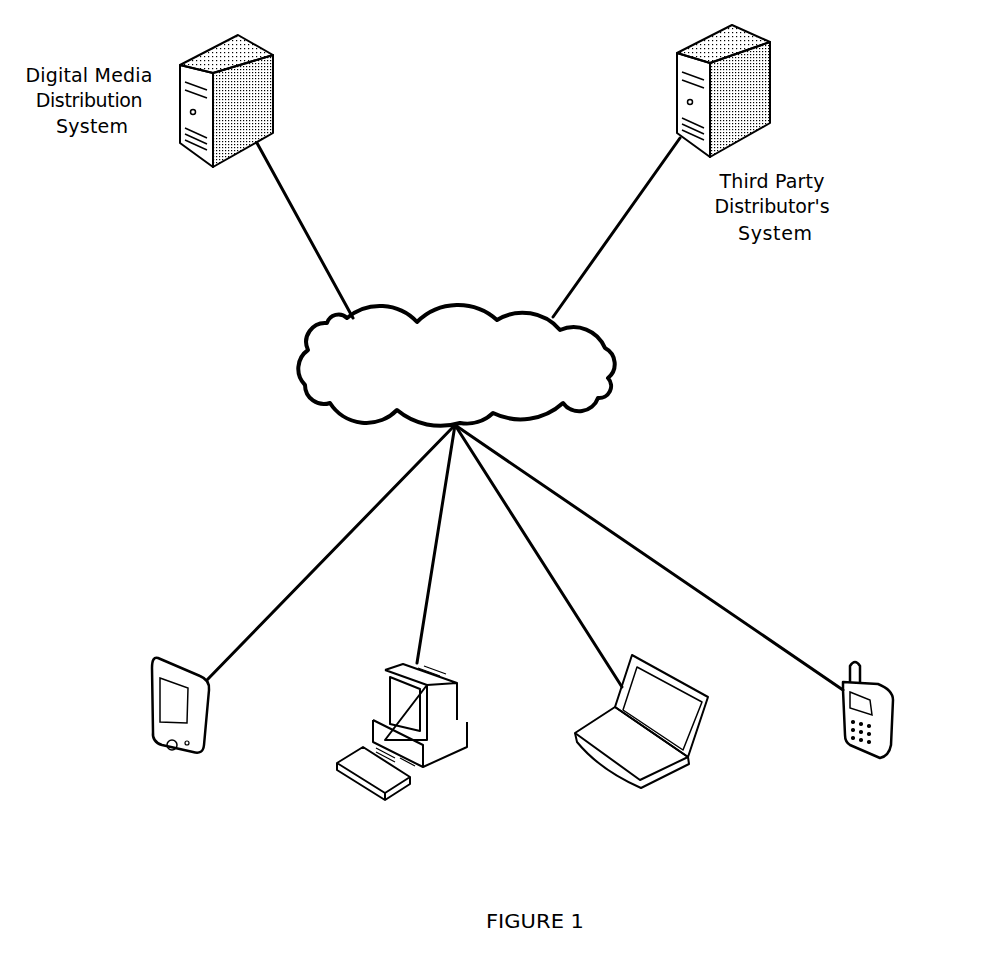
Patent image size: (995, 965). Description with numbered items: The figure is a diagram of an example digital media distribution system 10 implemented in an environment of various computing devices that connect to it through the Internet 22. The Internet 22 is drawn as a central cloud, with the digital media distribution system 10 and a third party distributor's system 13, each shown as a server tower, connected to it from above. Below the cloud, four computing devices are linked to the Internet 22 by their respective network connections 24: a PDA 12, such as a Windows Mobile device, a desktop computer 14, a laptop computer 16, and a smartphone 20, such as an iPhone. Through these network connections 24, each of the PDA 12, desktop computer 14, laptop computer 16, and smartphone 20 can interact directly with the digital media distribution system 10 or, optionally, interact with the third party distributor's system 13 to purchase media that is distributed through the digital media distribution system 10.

The digital media distribution system 10 is at (273, 90).
The third party distributor's system 13 is at (770, 87).
The Internet 22 is at (298, 384).
The network connections 24 is at (501, 414).
The PDA 12 is at (183, 758).
The desktop computer 14 is at (390, 797).
The laptop computer 16 is at (638, 787).
The smartphone 20 is at (880, 760).